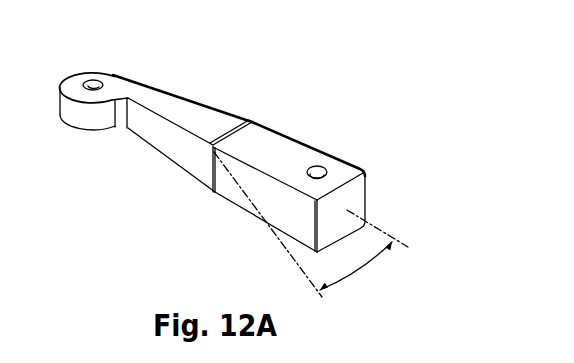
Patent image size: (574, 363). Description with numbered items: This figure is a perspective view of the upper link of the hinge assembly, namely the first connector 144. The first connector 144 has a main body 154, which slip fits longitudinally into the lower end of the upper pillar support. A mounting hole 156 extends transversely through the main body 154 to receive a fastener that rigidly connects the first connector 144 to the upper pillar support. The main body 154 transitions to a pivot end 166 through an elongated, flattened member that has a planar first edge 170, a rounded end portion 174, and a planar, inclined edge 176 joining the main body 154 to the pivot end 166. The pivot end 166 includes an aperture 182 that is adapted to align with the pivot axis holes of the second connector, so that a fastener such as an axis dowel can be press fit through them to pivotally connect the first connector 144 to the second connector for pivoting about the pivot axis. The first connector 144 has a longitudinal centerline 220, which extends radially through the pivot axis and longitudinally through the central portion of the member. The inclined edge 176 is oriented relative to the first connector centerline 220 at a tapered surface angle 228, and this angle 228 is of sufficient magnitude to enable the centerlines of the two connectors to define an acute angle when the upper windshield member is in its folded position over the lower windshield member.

The first connector 144 is at (316, 165).
The main body 154 is at (305, 158).
The mounting hole 156 is at (328, 172).
The pivot end 166 is at (187, 121).
The planar first edge 170 is at (222, 111).
The rounded end portion 174 is at (67, 82).
The planar, inclined edge 176 is at (190, 153).
The aperture 182 is at (94, 82).
The longitudinal centerline 220 is at (398, 233).
The tapered surface angle 228 is at (356, 269).